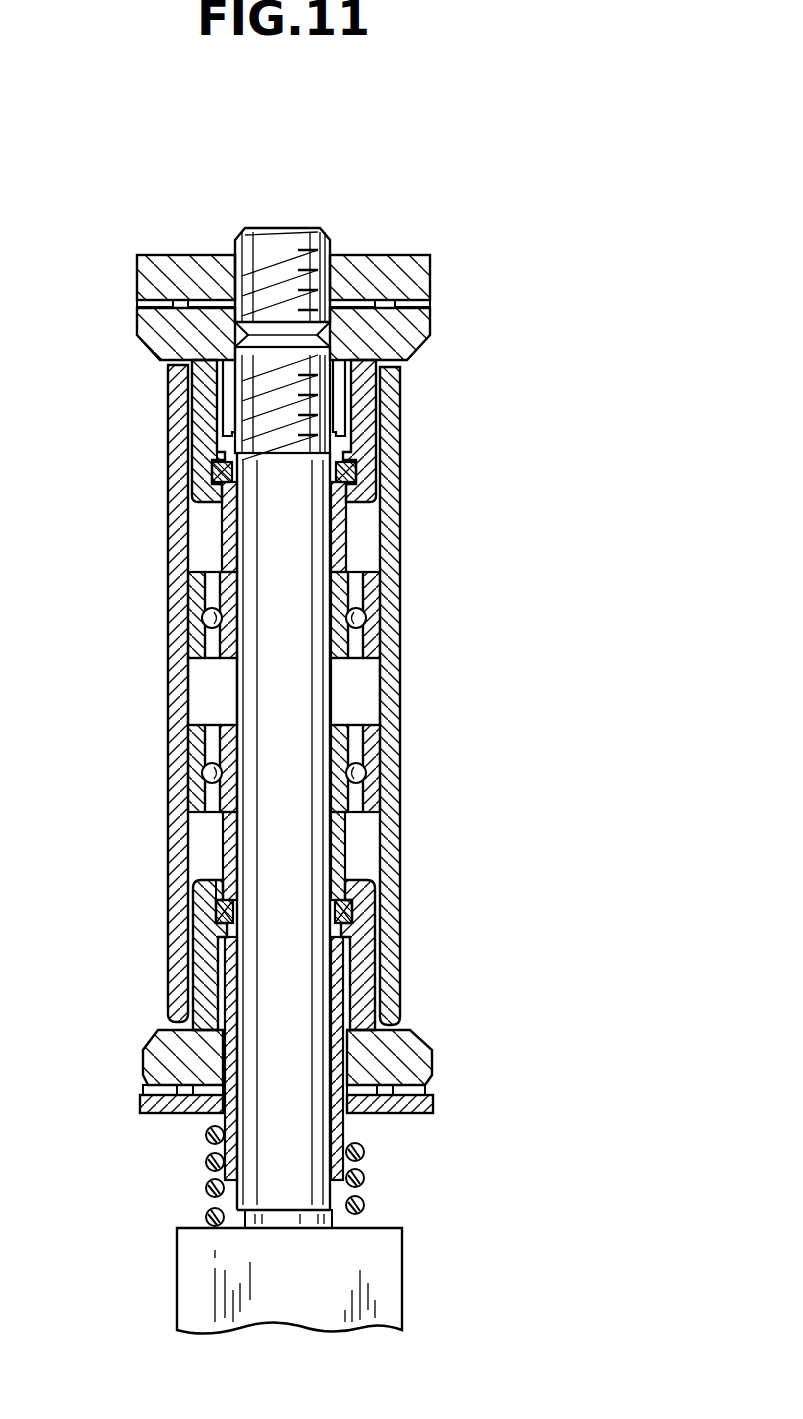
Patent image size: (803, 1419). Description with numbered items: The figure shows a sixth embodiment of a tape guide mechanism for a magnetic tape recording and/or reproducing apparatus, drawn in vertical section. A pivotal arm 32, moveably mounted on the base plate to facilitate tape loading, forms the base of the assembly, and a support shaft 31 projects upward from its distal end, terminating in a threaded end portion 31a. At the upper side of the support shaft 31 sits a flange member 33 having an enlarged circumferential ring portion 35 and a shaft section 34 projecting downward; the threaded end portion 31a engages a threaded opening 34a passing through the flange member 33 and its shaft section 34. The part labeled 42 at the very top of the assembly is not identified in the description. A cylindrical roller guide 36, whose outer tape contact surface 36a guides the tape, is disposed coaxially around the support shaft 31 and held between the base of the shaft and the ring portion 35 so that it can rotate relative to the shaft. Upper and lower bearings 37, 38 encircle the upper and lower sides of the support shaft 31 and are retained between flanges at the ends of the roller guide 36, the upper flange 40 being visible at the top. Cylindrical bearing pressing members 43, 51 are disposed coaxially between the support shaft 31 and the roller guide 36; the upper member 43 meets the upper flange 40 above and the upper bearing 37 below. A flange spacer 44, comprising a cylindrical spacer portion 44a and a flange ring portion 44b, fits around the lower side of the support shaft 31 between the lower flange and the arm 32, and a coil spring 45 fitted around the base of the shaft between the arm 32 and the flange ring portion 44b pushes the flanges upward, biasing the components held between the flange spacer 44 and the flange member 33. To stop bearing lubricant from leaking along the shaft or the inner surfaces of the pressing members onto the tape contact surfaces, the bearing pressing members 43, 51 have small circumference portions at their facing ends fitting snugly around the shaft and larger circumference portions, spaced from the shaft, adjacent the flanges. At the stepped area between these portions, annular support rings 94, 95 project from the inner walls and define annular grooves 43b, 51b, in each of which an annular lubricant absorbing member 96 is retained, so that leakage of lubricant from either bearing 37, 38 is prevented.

The support shaft 31 is at (315, 697).
The threaded end portion 31a is at (273, 445).
The pivotal arm 32 is at (197, 1283).
The flange member 33 is at (449, 275).
The shaft section 34 is at (337, 352).
The threaded opening 34a is at (197, 380).
The ring portion 35 is at (390, 266).
The cylindrical roller guide 36 is at (134, 649).
The outer tape contact surface 36a is at (169, 700).
The upper bearing 37 is at (372, 607).
The lower bearing 38 is at (372, 797).
The upper flange 40 is at (157, 330).
The nut 42 is at (282, 245).
The bearing pressing member 43 is at (360, 388).
The annular groove 43b is at (217, 473).
The flange spacer 44 is at (180, 1128).
The cylindrical spacer portion 44a is at (217, 1177).
The flange ring portion 44b is at (417, 1113).
The coil spring 45 is at (365, 1177).
The bearing pressing member 51 is at (344, 921).
The annular groove 51b is at (216, 912).
The annular support ring 94 is at (220, 457).
The annular support ring 95 is at (215, 930).
The annular lubricant absorbing member 96 is at (350, 472).